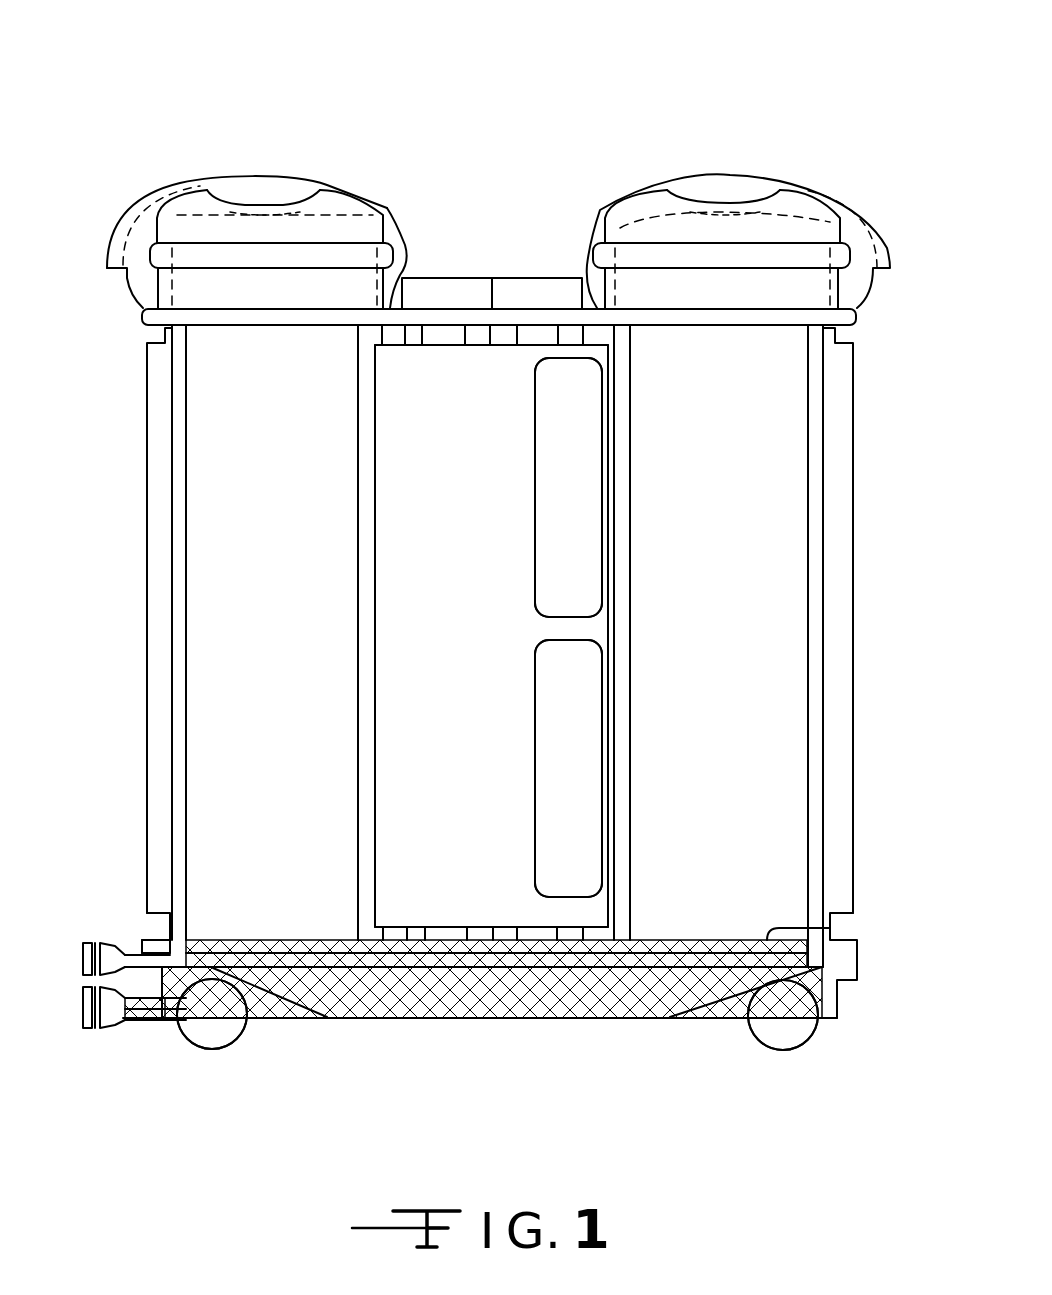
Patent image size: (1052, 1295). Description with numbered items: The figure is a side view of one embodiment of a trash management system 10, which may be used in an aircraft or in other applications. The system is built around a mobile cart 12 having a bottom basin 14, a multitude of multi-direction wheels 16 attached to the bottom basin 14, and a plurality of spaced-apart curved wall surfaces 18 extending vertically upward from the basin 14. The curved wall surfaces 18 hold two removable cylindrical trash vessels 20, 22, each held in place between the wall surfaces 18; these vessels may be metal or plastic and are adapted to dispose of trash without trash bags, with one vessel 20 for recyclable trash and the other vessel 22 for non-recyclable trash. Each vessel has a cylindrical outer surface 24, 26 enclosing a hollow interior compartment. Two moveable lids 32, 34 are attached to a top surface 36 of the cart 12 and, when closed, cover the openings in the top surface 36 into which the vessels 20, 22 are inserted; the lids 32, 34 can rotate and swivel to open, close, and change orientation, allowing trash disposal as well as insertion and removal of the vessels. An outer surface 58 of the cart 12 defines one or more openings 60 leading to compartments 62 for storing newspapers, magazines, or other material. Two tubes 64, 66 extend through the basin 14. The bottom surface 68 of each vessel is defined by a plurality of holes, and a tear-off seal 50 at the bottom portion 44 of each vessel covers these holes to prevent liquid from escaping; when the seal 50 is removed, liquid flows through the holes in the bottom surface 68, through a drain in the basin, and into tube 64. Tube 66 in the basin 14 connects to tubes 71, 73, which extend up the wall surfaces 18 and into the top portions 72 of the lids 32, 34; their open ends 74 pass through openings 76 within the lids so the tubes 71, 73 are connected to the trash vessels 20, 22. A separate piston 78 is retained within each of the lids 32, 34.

The trash management system 10 is at (770, 112).
The mobile cart 12 is at (283, 1020).
The bottom basin 14 is at (652, 1018).
The multi-direction wheels 16 is at (187, 1043).
The curved wall surfaces 18 is at (363, 378).
The trash vessel 20 is at (238, 527).
The trash vessel 22 is at (773, 593).
The cylindrical outer surface 24 is at (210, 453).
The cylindrical outer surface 26 is at (763, 543).
The moveable lid 32 is at (230, 182).
The moveable lid 34 is at (762, 176).
The top surface 36 is at (413, 278).
The bottom portion 44 is at (290, 938).
The tear-off seal 50 is at (260, 938).
The outer surface 58 is at (595, 623).
The opening 60 is at (573, 448).
The compartment 62 is at (573, 567).
The tube 64 is at (123, 1020).
The tube 66 is at (207, 935).
The bottom surface 68 is at (233, 938).
The tube 71 is at (180, 406).
The top portion 72 is at (190, 188).
The tube 73 is at (808, 624).
The open end 74 is at (277, 198).
The opening 76 is at (257, 208).
The piston 78 is at (203, 250).